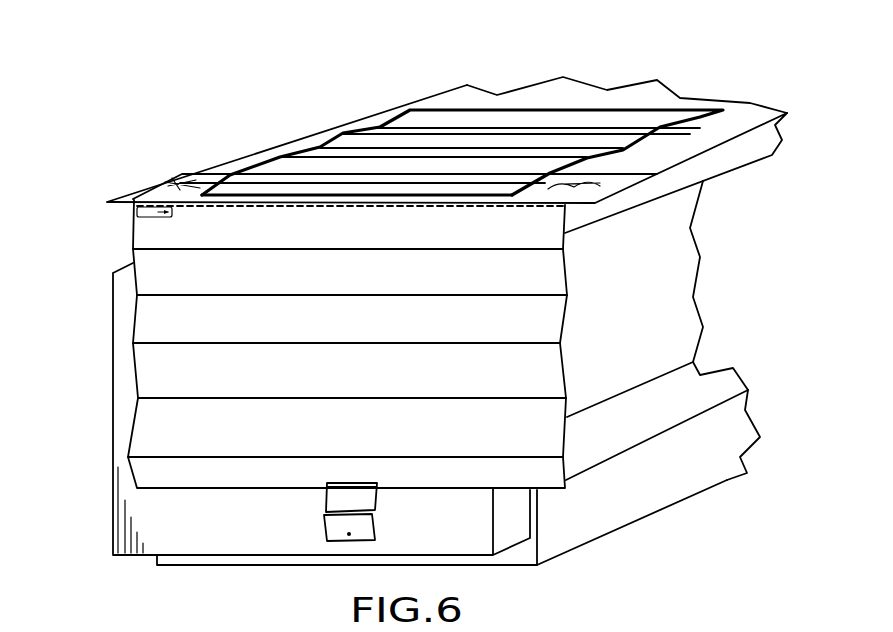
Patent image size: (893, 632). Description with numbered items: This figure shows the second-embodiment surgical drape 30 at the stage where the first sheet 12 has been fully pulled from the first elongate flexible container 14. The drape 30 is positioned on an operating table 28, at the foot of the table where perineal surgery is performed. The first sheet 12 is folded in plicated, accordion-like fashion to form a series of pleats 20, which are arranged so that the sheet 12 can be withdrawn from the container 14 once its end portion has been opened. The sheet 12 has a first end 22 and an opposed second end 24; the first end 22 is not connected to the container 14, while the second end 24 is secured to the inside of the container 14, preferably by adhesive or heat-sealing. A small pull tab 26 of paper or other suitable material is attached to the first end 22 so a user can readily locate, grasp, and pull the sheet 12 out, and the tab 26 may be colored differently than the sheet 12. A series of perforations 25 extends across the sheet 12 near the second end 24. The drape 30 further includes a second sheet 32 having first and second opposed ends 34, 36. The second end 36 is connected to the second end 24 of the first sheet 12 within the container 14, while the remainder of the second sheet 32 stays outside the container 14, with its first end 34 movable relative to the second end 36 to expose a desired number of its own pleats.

The first sheet 12 is at (150, 318).
The first elongate flexible container 14 is at (133, 195).
The pleats 20 is at (170, 363).
The first end 22 is at (88, 493).
The second end 24 is at (106, 228).
The perforations 25 is at (528, 206).
The pull tab 26 is at (336, 532).
The operating table 28 is at (737, 231).
The surgical drape 30 is at (280, 101).
The second sheet 32 is at (530, 67).
The first end 34 is at (553, 117).
The second end 36 is at (383, 186).